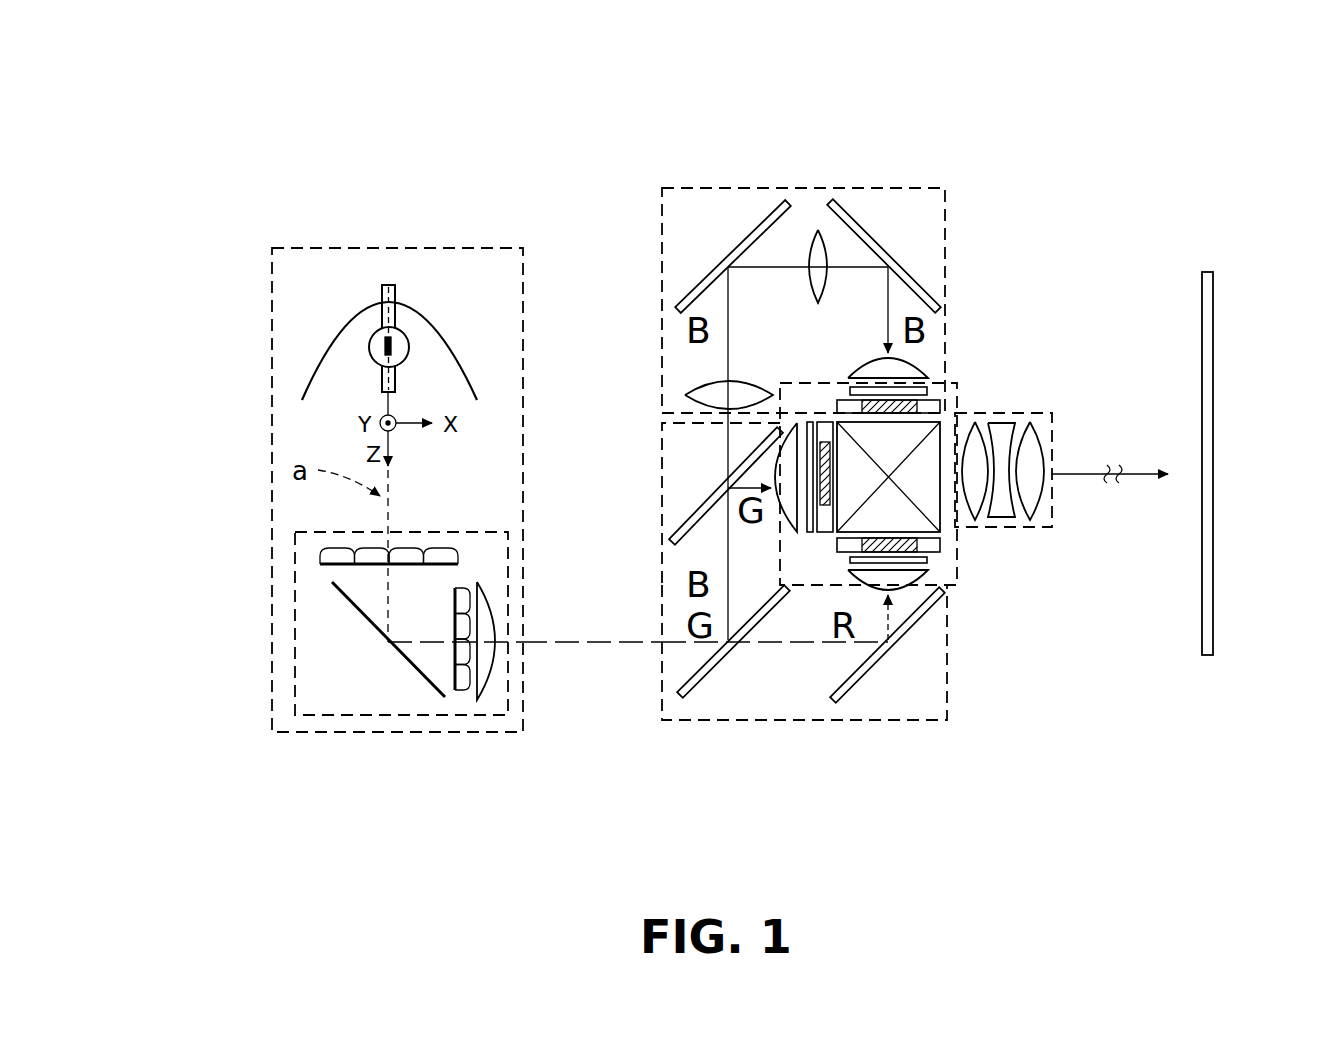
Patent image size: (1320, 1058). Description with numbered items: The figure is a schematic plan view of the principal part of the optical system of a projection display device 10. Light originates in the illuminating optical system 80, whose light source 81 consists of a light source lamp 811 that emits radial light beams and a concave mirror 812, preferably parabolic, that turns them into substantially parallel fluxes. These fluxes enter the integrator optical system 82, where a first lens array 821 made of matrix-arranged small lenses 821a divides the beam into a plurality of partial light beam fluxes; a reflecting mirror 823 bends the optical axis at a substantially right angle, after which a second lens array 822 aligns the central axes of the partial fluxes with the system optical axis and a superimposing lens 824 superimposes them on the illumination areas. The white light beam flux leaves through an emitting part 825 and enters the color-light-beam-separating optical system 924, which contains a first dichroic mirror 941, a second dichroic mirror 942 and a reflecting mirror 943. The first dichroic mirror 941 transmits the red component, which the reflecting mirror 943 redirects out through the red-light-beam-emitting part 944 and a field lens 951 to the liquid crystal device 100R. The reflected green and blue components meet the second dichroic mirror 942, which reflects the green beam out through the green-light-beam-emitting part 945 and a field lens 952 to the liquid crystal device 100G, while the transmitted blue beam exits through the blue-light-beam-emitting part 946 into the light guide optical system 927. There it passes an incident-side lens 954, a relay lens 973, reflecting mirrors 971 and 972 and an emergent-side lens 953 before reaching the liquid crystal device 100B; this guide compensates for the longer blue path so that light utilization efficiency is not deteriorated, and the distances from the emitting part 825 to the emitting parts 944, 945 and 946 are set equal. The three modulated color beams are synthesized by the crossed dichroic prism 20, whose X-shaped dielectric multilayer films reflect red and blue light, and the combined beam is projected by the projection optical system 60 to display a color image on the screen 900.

The projection display device 10 is at (1052, 72).
The crossed dichroic prism 20 is at (935, 432).
The projection optical system 60 is at (1053, 415).
The illuminating optical system 80 is at (271, 690).
The light source 81 is at (334, 331).
The integrator optical system 82 is at (294, 627).
The light source lamp 811 is at (373, 336).
The concave mirror 812 is at (312, 370).
The first lens array 821 is at (337, 520).
The small lens 821a is at (405, 557).
The second lens array 822 is at (461, 691).
The reflecting mirror 823 is at (415, 668).
The superimposing lens 824 is at (481, 701).
The emitting part 825 is at (523, 642).
The screen 900 is at (1214, 345).
The color-light-beam-separating optical system 924 is at (949, 702).
The light guide optical system 927 is at (692, 180).
The first dichroic mirror 941 is at (695, 690).
The second dichroic mirror 942 is at (736, 490).
The reflecting mirror 943 is at (855, 690).
The red-light-beam-emitting part 944 is at (913, 583).
The green-light-beam-emitting part 945 is at (777, 497).
The blue-light-beam-emitting part 946 is at (690, 432).
The field lens 951 is at (923, 573).
The field lens 952 is at (790, 422).
The emergent-side lens 953 is at (905, 366).
The incident-side lens 954 is at (712, 385).
The reflecting mirror 971 is at (701, 283).
The reflecting mirror 972 is at (868, 232).
The relay lens 973 is at (816, 229).
The liquid crystal device 100G is at (826, 430).
The liquid crystal device 100B is at (940, 400).
The liquid crystal device 100R is at (943, 552).